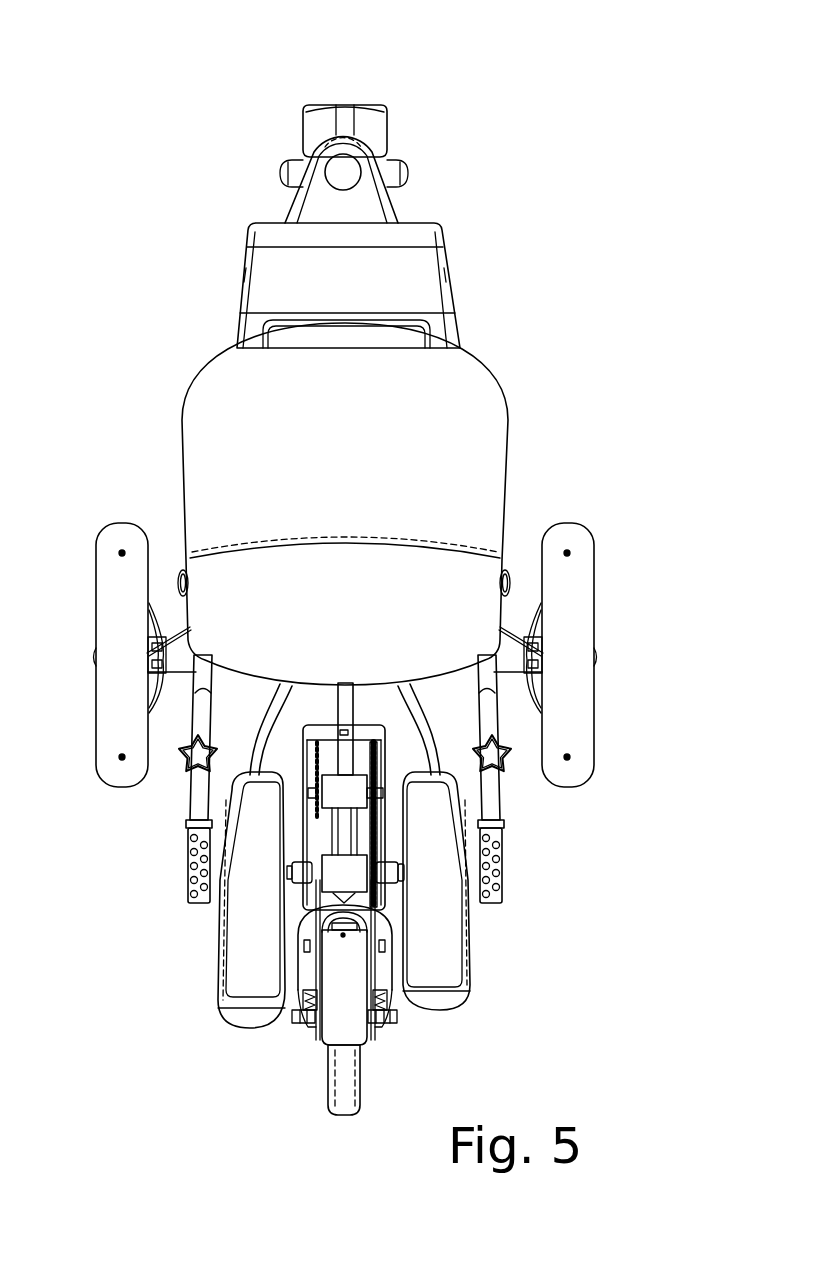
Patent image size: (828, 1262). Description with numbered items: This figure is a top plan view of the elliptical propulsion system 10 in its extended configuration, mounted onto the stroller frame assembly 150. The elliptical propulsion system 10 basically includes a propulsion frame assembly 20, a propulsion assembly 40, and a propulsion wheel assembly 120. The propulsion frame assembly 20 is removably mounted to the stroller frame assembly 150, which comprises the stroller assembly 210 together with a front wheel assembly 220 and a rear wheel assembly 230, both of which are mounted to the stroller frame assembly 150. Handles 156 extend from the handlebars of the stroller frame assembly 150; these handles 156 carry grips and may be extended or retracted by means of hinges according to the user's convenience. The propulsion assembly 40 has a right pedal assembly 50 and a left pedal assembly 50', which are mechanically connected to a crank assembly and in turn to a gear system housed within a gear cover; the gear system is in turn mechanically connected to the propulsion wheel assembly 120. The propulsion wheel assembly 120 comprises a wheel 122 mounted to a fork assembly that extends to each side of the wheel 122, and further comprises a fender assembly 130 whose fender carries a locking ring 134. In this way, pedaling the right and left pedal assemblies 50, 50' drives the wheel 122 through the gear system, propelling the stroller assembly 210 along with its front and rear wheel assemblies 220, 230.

The elliptical propulsion system 10 is at (610, 817).
The propulsion frame assembly 20 is at (347, 712).
The propulsion assembly 40 is at (497, 891).
The right pedal assembly 50 is at (483, 884).
The left pedal assembly 50' is at (195, 900).
The propulsion wheel assembly 120 is at (345, 1038).
The wheel 122 is at (335, 1115).
The fender assembly 130 is at (367, 1045).
The locking ring 134 is at (345, 980).
The stroller frame assembly 150 is at (275, 779).
The handles 156 is at (200, 807).
The stroller assembly 210 is at (520, 391).
The front wheel assembly 220 is at (385, 103).
The rear wheel assembly 230 is at (105, 520).